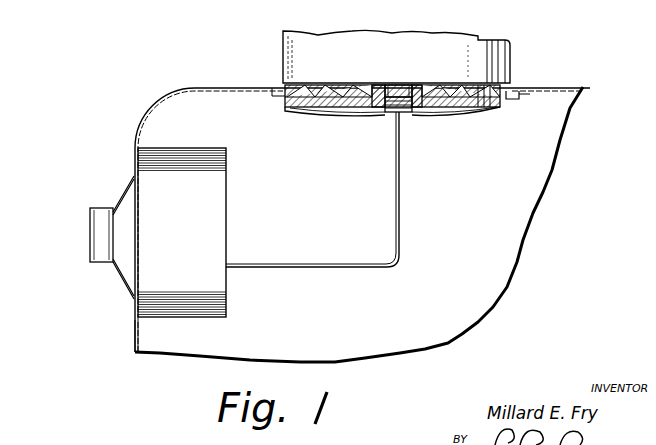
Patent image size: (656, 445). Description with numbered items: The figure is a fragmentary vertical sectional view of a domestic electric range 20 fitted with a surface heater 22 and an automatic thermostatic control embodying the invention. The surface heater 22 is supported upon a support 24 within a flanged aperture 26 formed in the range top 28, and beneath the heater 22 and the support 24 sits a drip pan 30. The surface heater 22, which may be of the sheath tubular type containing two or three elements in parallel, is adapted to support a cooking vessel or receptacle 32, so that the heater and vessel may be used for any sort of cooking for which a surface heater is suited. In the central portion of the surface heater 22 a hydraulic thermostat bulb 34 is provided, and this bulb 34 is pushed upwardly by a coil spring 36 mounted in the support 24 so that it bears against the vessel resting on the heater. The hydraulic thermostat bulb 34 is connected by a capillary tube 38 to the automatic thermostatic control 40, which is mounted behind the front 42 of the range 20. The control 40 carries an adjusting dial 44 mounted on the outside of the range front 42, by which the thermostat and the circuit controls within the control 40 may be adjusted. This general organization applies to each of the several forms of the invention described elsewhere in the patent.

The domestic electric range 20 is at (212, 88).
The surface heater 22 is at (480, 100).
The support 24 is at (337, 109).
The flanged aperture 26 is at (514, 98).
The range top 28 is at (562, 88).
The drip pan 30 is at (312, 111).
The cooking vessel 32 is at (512, 72).
The hydraulic thermostat bulb 34 is at (398, 91).
The coil spring 36 is at (389, 113).
The capillary tube 38 is at (400, 232).
The automatic thermostatic control 40 is at (220, 219).
The range front 42 is at (134, 341).
The adjusting dial 44 is at (90, 241).